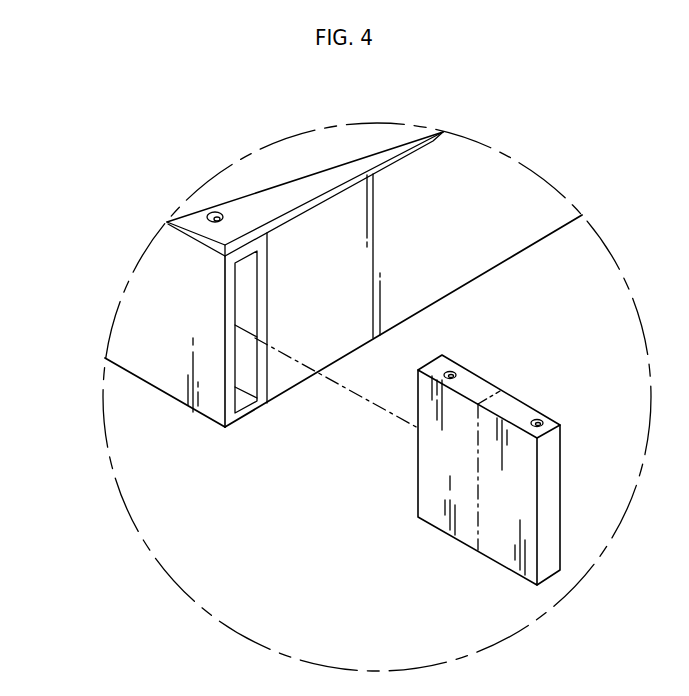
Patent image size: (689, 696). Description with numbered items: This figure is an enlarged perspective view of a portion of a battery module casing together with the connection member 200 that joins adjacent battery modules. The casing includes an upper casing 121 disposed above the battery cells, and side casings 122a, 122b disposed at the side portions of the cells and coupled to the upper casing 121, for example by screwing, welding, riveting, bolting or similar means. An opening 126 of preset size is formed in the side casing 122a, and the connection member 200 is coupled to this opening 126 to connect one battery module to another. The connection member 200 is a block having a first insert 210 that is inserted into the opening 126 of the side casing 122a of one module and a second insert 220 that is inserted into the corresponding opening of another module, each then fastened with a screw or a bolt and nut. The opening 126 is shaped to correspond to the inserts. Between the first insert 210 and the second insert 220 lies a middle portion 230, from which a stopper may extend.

The upper casing 121 is at (292, 167).
The side casing 122a is at (150, 313).
The side casing 122b is at (498, 189).
The opening 126 is at (245, 345).
The connection member 200 is at (458, 458).
The first insert 210 is at (444, 454).
The second insert 220 is at (523, 412).
The middle portion 230 is at (478, 457).